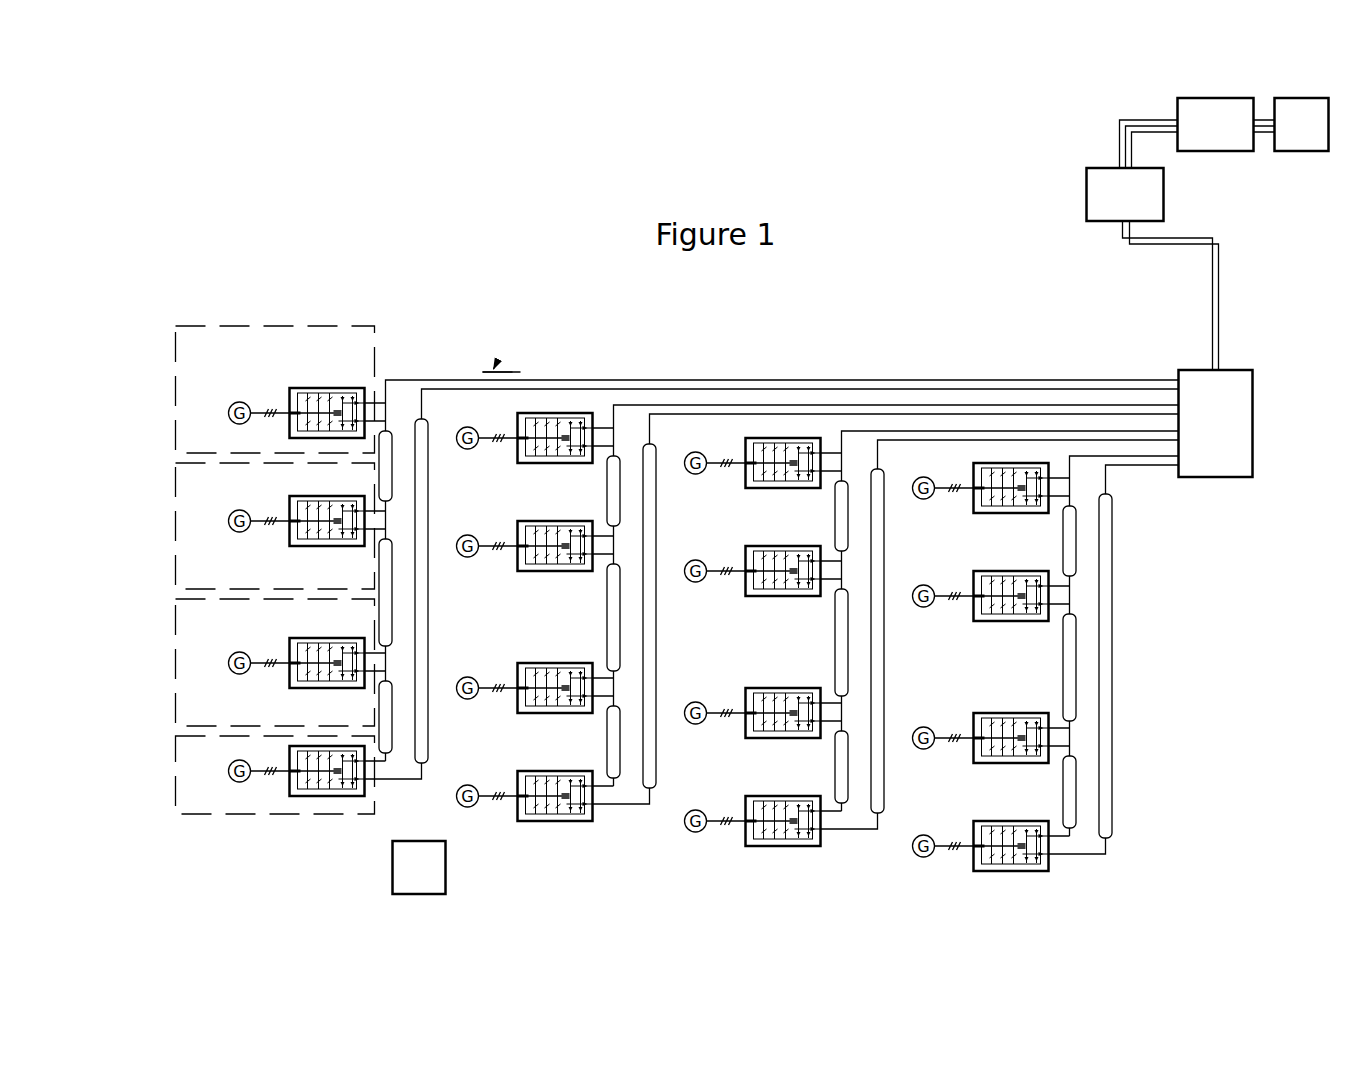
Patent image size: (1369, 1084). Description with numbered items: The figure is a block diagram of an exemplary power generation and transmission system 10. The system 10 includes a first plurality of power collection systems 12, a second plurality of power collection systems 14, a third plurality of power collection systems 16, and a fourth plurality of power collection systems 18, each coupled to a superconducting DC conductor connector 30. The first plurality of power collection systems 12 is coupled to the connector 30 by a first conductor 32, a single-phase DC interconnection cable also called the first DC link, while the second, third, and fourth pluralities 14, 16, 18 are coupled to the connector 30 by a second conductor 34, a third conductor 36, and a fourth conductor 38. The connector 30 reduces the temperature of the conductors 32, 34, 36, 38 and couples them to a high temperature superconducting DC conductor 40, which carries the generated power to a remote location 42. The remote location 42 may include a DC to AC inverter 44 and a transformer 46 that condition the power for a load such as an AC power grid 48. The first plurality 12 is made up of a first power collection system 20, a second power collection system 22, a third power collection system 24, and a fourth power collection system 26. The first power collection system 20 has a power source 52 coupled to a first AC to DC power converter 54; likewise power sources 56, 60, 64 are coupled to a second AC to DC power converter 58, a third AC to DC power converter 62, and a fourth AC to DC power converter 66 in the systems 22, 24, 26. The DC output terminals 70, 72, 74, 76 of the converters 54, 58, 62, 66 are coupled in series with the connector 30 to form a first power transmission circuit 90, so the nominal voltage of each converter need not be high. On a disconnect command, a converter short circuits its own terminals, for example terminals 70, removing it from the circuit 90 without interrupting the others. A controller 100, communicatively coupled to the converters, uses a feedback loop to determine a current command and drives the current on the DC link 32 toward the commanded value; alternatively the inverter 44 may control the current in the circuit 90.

The power generation and transmission system 10 is at (866, 349).
The first plurality of power collection systems 12 is at (375, 822).
The second plurality of power collection systems 14 is at (565, 850).
The third plurality of power collection systems 16 is at (805, 858).
The fourth plurality of power collection systems 18 is at (1022, 888).
The first power collection system 20 is at (172, 392).
The second power collection system 22 is at (172, 528).
The third power collection system 24 is at (172, 665).
The fourth power collection system 26 is at (172, 793).
The superconducting DC conductor connector 30 is at (1186, 368).
The first conductor 32 is at (450, 379).
The second conductor 34 is at (613, 404).
The third conductor 36 is at (841, 430).
The fourth conductor 38 is at (1069, 455).
The high temperature superconducting DC conductor 40 is at (1212, 311).
The remote location 42 is at (1118, 266).
The DC to AC inverter 44 is at (1086, 185).
The transformer 46 is at (1177, 108).
The AC power grid 48 is at (1302, 150).
The power source 52 is at (231, 402).
The first AC to DC power converter 54 is at (297, 387).
The power source 56 is at (231, 510).
The second AC to DC power converter 58 is at (297, 495).
The power source 60 is at (231, 652).
The third AC to DC power converter 62 is at (297, 688).
The power source 64 is at (231, 760).
The fourth AC to DC power converter 66 is at (297, 794).
The DC output terminals 70 is at (363, 392).
The DC output terminals 72 is at (363, 499).
The DC output terminals 74 is at (363, 641).
The DC output terminals 76 is at (368, 771).
The first power transmission circuit 90 is at (410, 379).
The controller 100 is at (401, 880).